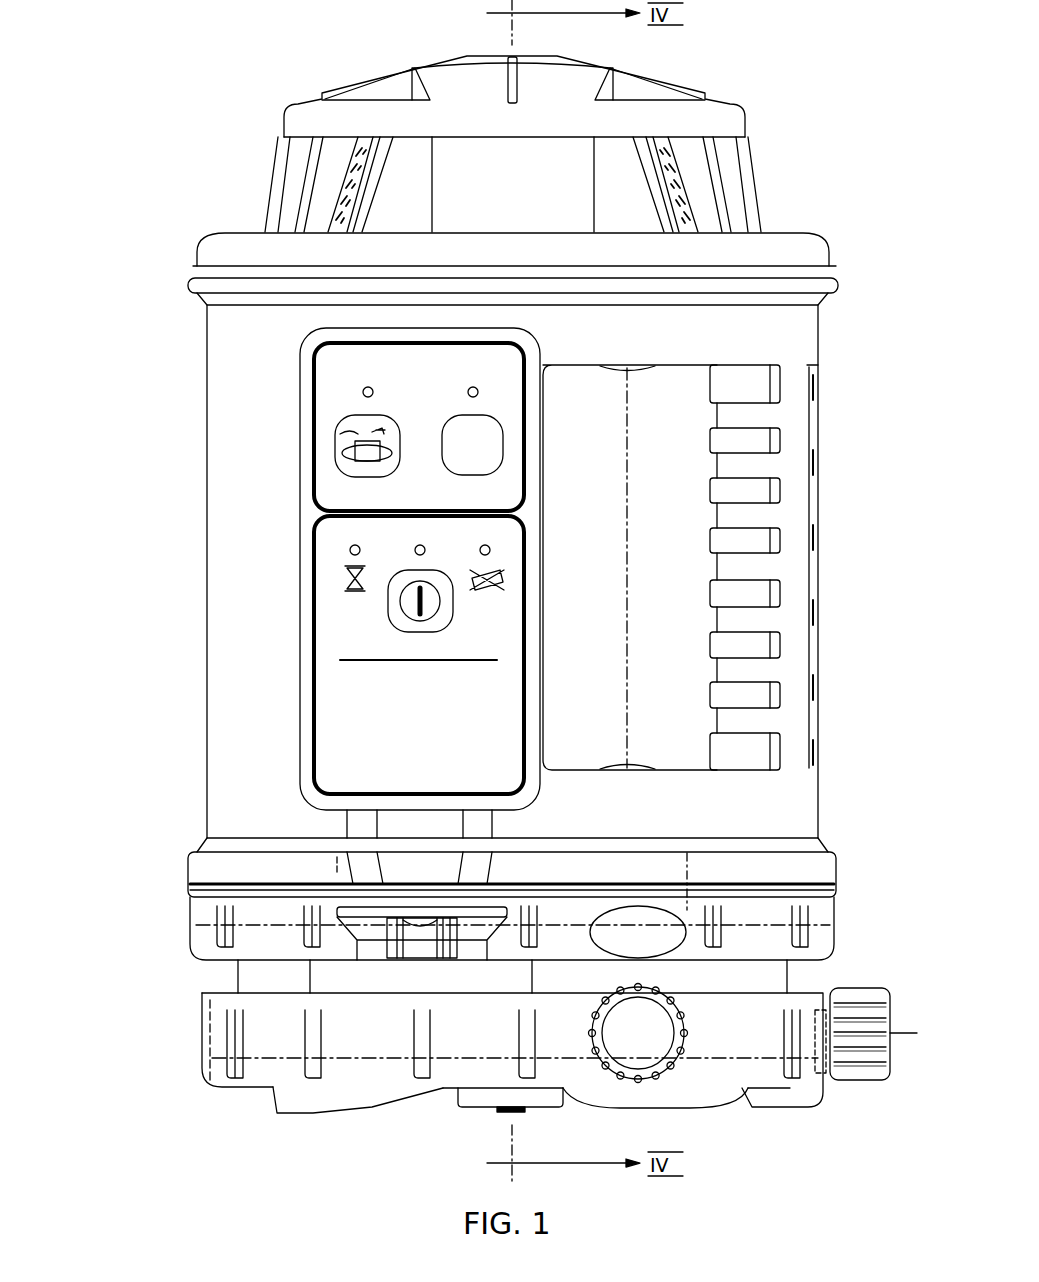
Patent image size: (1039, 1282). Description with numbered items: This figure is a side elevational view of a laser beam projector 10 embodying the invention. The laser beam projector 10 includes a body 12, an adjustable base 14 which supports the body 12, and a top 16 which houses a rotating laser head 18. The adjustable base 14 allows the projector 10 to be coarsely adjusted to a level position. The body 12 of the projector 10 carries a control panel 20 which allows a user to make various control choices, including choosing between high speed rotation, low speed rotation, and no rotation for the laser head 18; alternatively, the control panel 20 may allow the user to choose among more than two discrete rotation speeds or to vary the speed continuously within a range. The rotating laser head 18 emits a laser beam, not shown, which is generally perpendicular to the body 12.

The laser beam projector 10 is at (826, 146).
The body 12 is at (250, 613).
The adjustable base 14 is at (210, 976).
The top 16 is at (322, 89).
The rotating laser head 18 is at (490, 180).
The control panel 20 is at (300, 457).